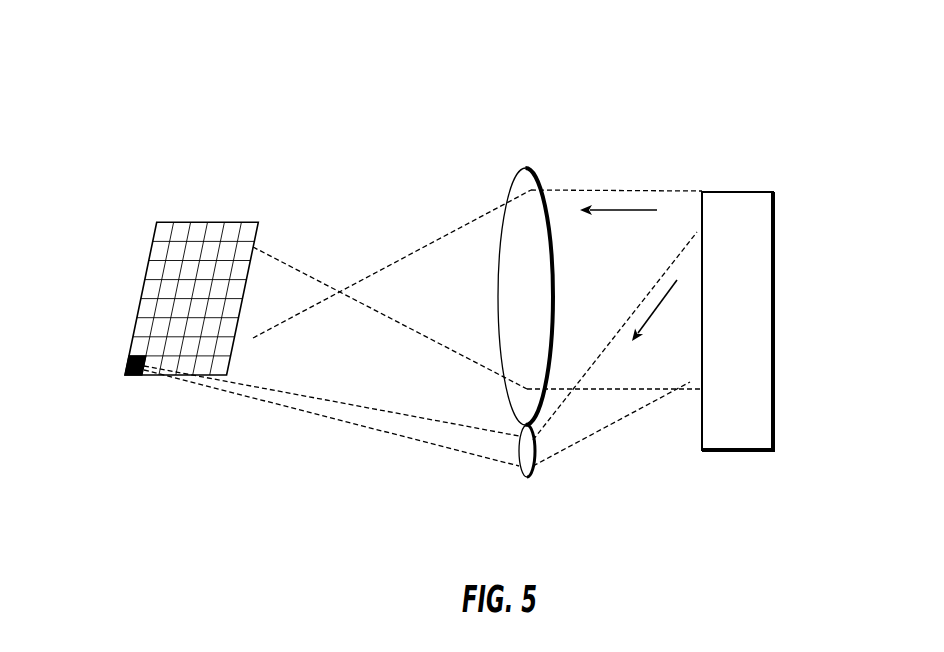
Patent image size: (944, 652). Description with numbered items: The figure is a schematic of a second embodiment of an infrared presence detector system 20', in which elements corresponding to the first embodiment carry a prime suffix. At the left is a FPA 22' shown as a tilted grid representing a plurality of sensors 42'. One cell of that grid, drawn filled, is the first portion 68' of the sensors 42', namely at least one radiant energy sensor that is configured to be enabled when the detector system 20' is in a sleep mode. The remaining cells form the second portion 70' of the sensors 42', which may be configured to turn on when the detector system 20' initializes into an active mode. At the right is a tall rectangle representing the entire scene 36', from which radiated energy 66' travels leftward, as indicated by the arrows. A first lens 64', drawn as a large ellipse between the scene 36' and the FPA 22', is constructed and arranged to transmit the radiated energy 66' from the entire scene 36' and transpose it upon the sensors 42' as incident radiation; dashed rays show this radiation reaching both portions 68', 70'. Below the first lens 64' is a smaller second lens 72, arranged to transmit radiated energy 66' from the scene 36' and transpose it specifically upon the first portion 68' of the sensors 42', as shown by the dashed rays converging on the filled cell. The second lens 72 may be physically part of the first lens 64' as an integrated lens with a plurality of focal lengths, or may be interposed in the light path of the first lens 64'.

The detector system 20' is at (709, 257).
The FPA 22' is at (249, 261).
The sensors 42' is at (225, 261).
The second portion of the sensors 70' is at (165, 298).
The first portion of the sensors 68' is at (99, 398).
The first lens 64' is at (554, 276).
The second lens 72 is at (535, 450).
The scene 36' is at (772, 321).
The radiated energy 66' is at (423, 328).